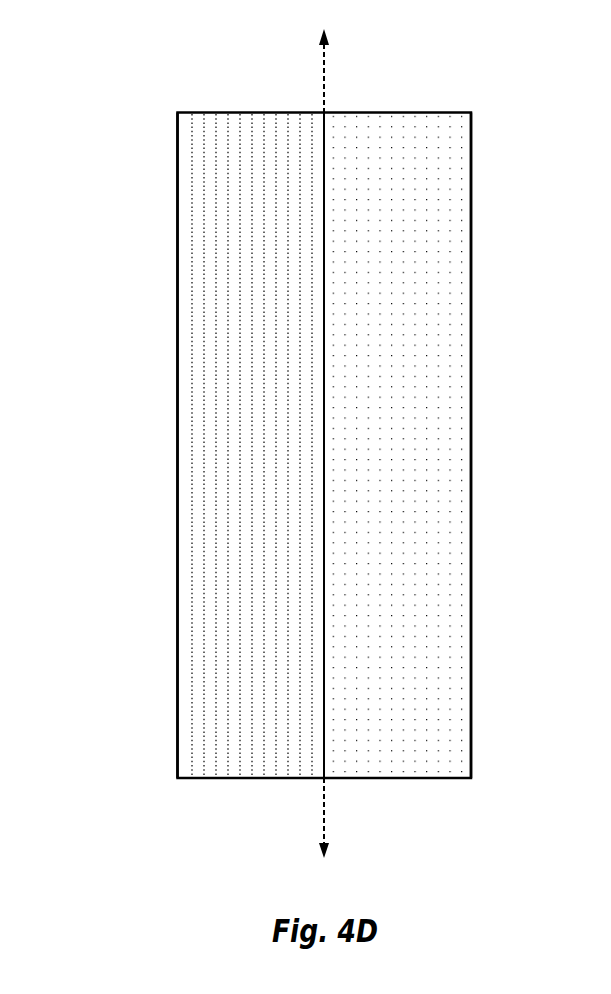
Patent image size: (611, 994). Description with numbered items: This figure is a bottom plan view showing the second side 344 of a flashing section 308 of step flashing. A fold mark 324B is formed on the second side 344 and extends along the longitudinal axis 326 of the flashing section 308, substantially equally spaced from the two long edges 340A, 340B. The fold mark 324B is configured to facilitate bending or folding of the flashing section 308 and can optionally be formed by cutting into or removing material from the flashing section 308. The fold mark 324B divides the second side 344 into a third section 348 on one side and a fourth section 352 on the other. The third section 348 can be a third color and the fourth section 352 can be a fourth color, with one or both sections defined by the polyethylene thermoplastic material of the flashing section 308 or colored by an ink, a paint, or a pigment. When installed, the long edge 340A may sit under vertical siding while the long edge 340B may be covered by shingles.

The flashing section 308 is at (99, 81).
The second side 344 is at (420, 130).
The long edge 340A is at (471, 528).
The long edge 340B is at (177, 523).
The third section 348 is at (270, 764).
The fourth section 352 is at (415, 764).
The longitudinal axis 326 is at (323, 806).
The fold mark 324B is at (324, 758).